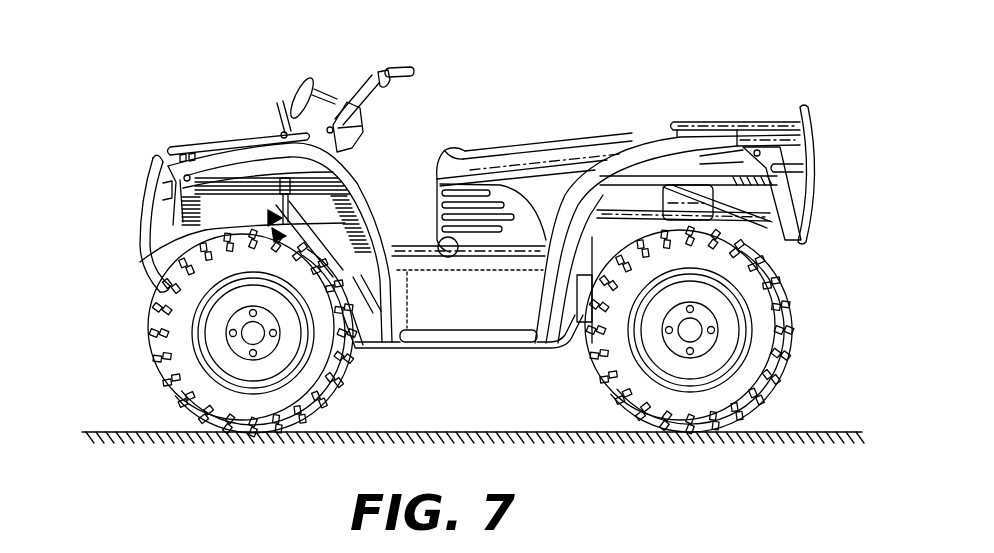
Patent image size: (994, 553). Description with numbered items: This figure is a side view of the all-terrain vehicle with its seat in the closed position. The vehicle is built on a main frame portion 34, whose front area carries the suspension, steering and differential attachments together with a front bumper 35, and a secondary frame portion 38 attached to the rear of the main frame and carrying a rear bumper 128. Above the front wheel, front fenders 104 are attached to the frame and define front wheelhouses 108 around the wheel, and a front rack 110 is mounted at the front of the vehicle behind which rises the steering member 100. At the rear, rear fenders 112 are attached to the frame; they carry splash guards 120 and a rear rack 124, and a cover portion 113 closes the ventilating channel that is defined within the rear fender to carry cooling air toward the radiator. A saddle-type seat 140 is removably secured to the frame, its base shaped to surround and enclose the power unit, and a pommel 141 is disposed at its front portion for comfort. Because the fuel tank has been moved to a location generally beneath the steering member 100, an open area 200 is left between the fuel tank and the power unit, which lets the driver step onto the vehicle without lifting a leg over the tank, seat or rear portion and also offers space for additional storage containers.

The main frame portion 34 is at (377, 343).
The front bumper 35 is at (137, 212).
The secondary frame portion 38 is at (750, 226).
The steering member 100 is at (372, 72).
The front fenders 104 is at (210, 170).
The front wheelhouses 108 is at (157, 238).
The front rack 110 is at (253, 135).
The rear fenders 112 is at (643, 160).
The cover portion 113 is at (657, 143).
The splash guards 120 is at (808, 210).
The rear rack 124 is at (726, 122).
The rear bumper 128 is at (813, 130).
The saddle-type seat 140 is at (513, 150).
The pommel 141 is at (466, 152).
The open area 200 is at (423, 199).